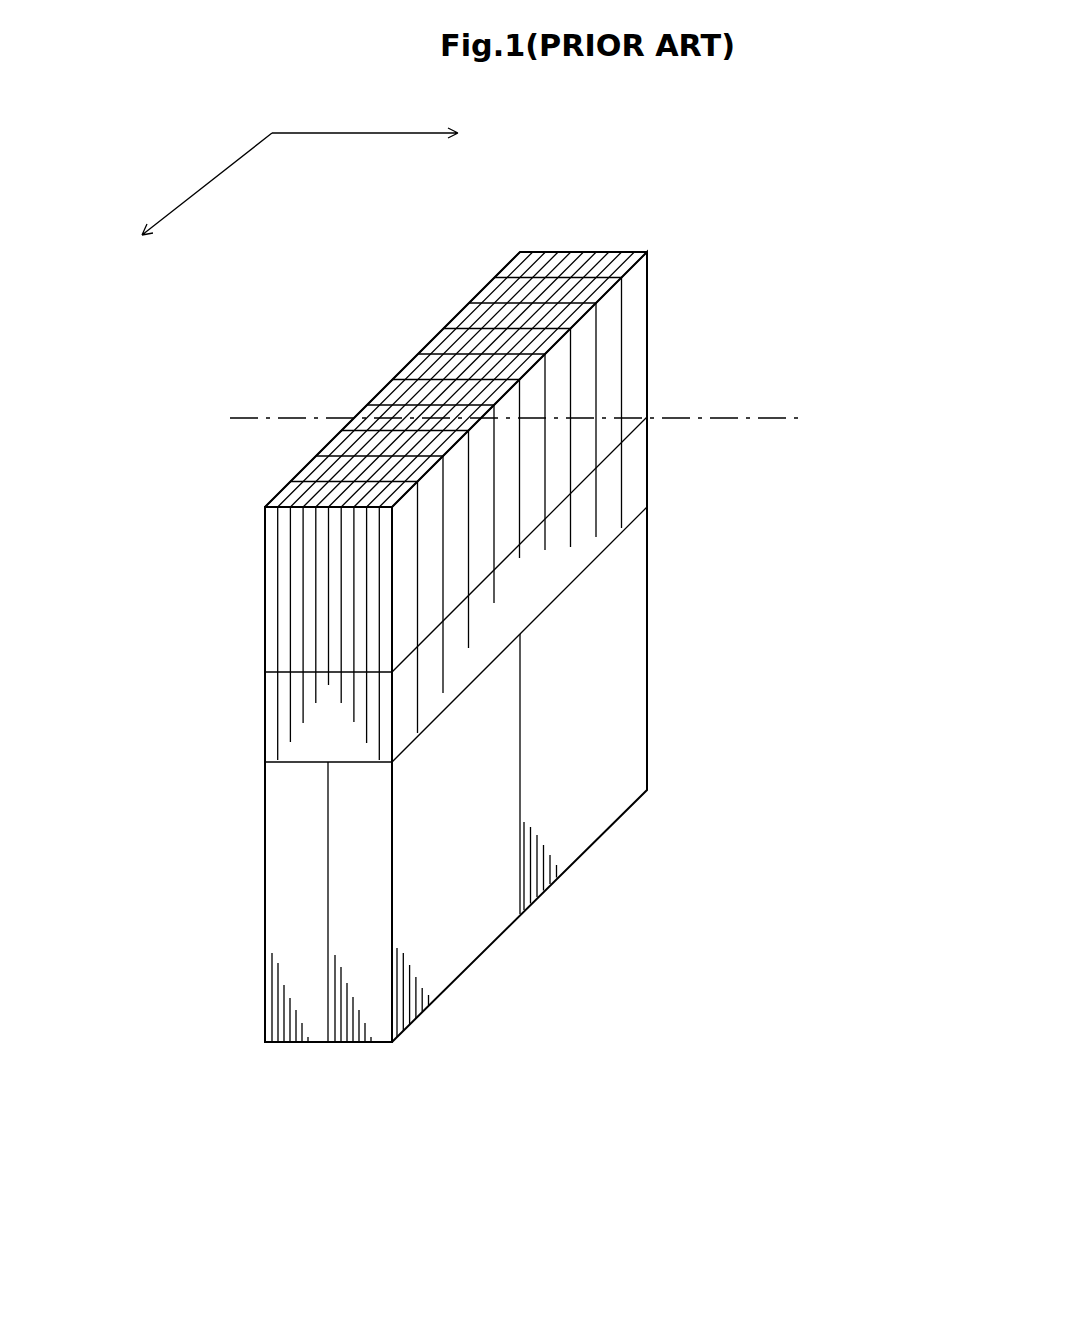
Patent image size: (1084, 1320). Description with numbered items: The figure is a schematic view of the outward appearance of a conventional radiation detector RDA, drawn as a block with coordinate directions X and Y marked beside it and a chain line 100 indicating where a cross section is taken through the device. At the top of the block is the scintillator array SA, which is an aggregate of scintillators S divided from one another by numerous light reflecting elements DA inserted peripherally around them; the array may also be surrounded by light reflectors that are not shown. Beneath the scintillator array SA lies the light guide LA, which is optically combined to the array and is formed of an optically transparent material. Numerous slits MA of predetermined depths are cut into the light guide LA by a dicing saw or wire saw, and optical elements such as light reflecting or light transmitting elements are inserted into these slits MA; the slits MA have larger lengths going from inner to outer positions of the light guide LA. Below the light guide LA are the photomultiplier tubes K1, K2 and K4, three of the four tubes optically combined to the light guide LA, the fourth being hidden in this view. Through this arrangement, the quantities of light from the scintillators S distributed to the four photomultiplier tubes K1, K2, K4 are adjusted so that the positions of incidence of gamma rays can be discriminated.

The radiation detector RDA is at (584, 231).
The scintillator array SA is at (464, 426).
The scintillator S is at (207, 510).
The light reflecting element DA is at (624, 353).
The section line 100 is at (230, 417).
The light guide LA is at (636, 481).
The slit MA is at (278, 725).
The photomultiplier tube K1 is at (315, 990).
The photomultiplier tube K2 is at (453, 955).
The photomultiplier tube K4 is at (633, 752).
The X direction X is at (385, 136).
The Y direction Y is at (198, 200).